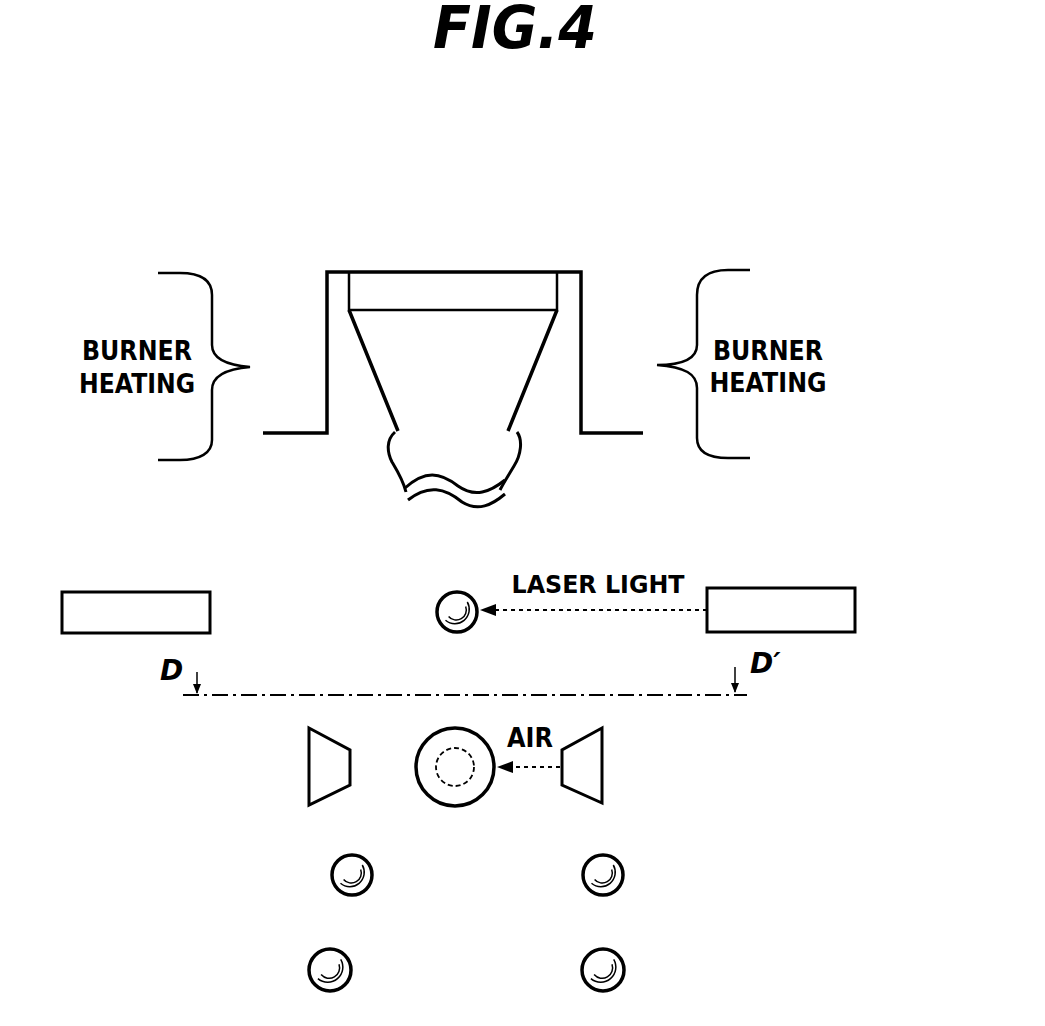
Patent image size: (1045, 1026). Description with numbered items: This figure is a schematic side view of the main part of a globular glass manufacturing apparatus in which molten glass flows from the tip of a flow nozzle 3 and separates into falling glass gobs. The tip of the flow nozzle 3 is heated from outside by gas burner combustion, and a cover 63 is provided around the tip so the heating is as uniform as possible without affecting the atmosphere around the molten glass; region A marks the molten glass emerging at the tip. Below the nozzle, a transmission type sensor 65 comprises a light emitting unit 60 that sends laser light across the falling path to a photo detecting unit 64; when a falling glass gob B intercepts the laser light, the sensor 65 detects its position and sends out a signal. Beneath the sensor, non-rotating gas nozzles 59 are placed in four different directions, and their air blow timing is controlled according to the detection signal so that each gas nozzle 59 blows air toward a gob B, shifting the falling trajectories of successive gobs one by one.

The flow nozzle 3 is at (468, 325).
The cover 63 is at (582, 302).
The molten glass gob / drop region A is at (523, 453).
The glass gob B is at (447, 610).
The transmission type sensor 65 is at (63, 578).
The photo detecting unit 64 is at (83, 620).
The light emitting unit 60 is at (842, 608).
The gas nozzle 59 is at (583, 762).